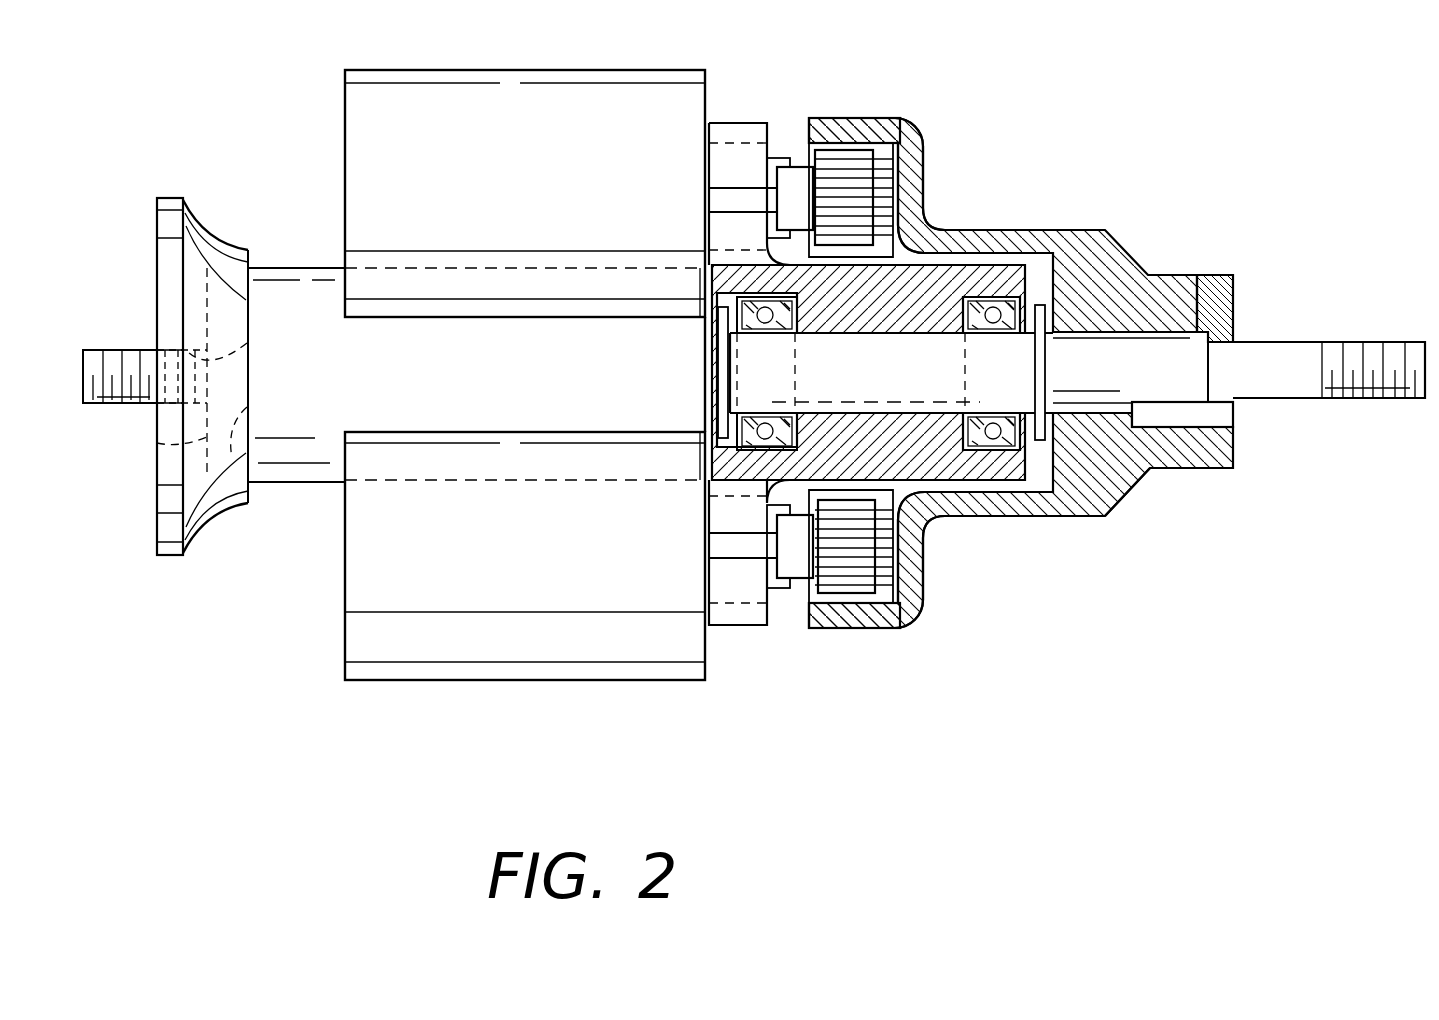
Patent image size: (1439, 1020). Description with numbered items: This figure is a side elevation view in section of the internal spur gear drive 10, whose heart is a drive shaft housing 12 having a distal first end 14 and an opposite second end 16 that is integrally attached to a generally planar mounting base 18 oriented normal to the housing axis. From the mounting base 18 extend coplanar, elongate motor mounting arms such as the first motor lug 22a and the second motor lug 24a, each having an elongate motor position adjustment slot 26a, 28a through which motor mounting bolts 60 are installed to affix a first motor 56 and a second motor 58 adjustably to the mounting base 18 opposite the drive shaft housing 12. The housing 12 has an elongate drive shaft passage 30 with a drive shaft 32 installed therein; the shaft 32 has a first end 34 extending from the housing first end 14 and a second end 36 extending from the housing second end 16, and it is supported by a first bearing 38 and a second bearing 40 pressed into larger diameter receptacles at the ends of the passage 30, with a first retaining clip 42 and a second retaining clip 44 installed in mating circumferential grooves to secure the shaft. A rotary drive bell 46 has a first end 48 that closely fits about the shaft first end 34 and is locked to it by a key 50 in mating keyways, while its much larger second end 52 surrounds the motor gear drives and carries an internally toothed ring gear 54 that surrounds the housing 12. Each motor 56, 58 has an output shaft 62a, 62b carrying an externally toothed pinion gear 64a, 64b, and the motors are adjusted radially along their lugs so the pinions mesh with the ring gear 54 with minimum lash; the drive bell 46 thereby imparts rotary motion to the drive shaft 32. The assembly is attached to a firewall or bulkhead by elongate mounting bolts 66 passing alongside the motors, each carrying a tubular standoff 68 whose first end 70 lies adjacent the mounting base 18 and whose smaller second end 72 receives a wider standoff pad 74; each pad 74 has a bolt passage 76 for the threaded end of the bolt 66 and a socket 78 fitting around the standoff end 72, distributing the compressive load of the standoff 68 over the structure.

The spur gear drive 10 is at (793, 720).
The drive shaft housing 12 is at (929, 265).
The first end 14 is at (1012, 260).
The second end 16 is at (709, 252).
The mounting base 18 is at (752, 123).
The first motor lug 22a is at (709, 130).
The second motor lug 24a is at (709, 604).
The motor position adjustment slot 26a is at (709, 165).
The motor position adjustment slot 28a is at (709, 580).
The drive shaft passage 30 is at (879, 413).
The drive shaft 32 is at (1102, 330).
The first end 34 is at (1198, 330).
The second end 36 is at (718, 355).
The first bearing 38 is at (996, 446).
The second bearing 40 is at (712, 442).
The first retaining clip 42 is at (1070, 462).
The second retaining clip 44 is at (718, 383).
The rotary drive bell 46 is at (973, 516).
The first end 48 is at (1216, 468).
The key 50 is at (1233, 415).
The second end 52 is at (908, 118).
The ring gear 54 is at (904, 619).
The first motor 56 is at (507, 201).
The second motor 58 is at (502, 578).
The motor mounting bolt 60 is at (793, 167).
The output shaft 62a is at (718, 198).
The output shaft 62b is at (718, 545).
The pinion gear 64a is at (844, 158).
The pinion gear 64b is at (850, 585).
The mounting bolt 66 is at (123, 350).
The standoff 68 is at (488, 388).
The first end 70 is at (712, 402).
The second end 72 is at (157, 443).
The standoff pad 74 is at (177, 198).
The bolt passage 76 is at (248, 344).
The socket 78 is at (248, 408).